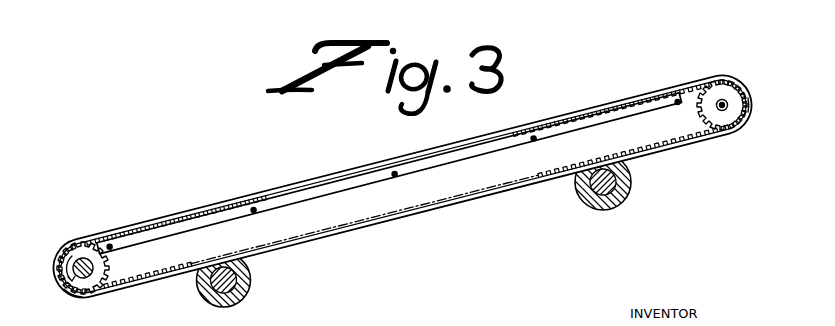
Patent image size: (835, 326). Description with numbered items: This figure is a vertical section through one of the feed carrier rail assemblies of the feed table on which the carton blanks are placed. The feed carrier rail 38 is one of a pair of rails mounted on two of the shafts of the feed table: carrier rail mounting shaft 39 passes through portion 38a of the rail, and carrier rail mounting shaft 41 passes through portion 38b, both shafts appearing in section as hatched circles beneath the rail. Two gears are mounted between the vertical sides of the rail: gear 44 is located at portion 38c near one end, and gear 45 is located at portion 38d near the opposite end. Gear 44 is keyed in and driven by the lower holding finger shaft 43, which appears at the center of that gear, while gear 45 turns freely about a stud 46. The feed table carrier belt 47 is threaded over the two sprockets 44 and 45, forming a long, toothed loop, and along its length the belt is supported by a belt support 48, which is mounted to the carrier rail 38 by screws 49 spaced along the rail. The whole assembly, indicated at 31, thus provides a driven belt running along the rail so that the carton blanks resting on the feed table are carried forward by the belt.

The conveyor belt assembly 31 is at (754, 85).
The feed carrier rail 38 is at (480, 189).
The portion of feed carrier rail 38a is at (582, 200).
The portion of feed carrier rail 38b is at (252, 282).
The portion of feed carrier rail 38c is at (77, 296).
The portion of feed carrier rail 38d is at (750, 119).
The carrier rail mounting shaft 39 is at (600, 186).
The carrier rail mounting shaft 41 is at (248, 289).
The lower holding finger shaft 43 is at (73, 265).
The gear 44 is at (88, 291).
The gear 45 is at (744, 115).
The stud 46 is at (727, 105).
The feed table carrier belt 47 is at (257, 173).
The belt support 48 is at (378, 180).
The screw 49 is at (680, 99).